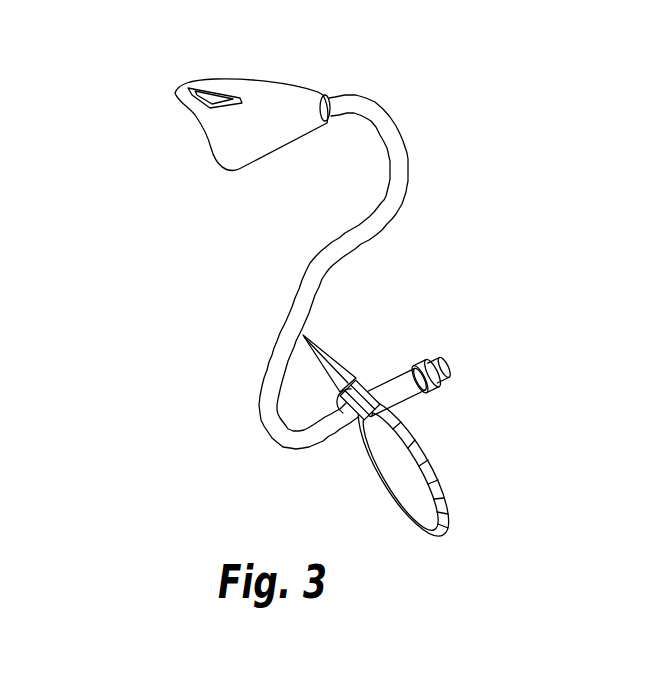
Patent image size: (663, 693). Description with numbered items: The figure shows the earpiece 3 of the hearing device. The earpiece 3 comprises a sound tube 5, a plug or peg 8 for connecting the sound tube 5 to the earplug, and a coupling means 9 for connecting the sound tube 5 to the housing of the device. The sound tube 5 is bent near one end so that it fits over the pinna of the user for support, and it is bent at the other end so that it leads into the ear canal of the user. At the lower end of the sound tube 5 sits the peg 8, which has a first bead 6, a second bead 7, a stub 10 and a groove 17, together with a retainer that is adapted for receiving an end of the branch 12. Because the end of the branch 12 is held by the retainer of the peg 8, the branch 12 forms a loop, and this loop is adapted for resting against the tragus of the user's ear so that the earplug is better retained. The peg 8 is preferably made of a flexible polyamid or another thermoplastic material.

The earpiece 3 is at (184, 330).
The sound tube 5 is at (400, 200).
The coupling means 9 is at (292, 80).
The peg 8 is at (384, 352).
The groove 17 is at (421, 360).
The first bead 6 is at (447, 380).
The second bead 7 is at (430, 397).
The stub 10 is at (410, 400).
The branch 12 is at (403, 498).